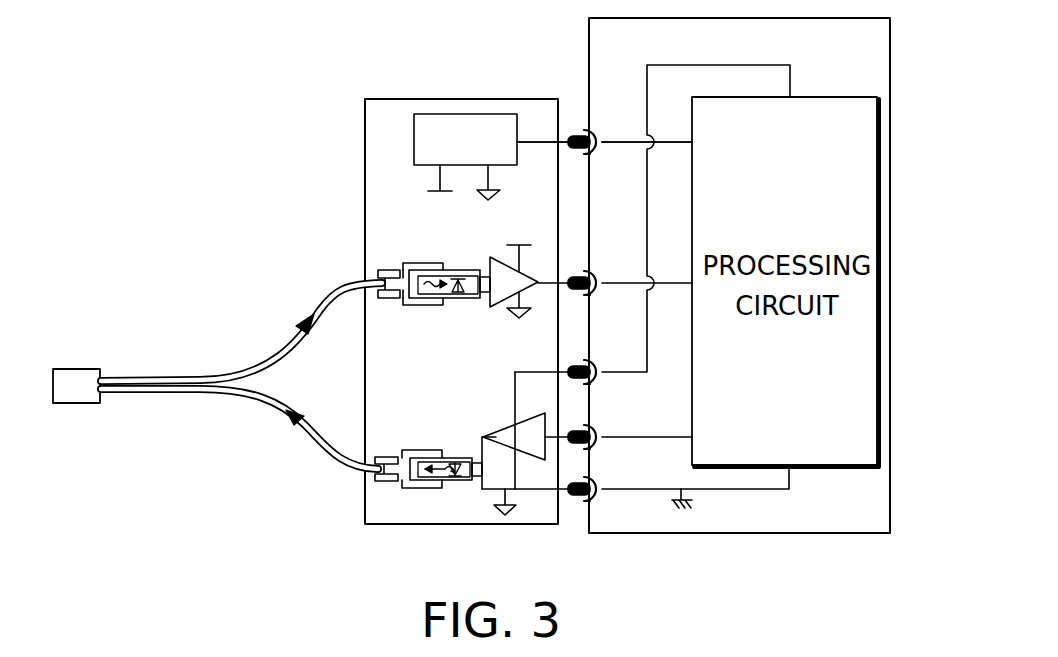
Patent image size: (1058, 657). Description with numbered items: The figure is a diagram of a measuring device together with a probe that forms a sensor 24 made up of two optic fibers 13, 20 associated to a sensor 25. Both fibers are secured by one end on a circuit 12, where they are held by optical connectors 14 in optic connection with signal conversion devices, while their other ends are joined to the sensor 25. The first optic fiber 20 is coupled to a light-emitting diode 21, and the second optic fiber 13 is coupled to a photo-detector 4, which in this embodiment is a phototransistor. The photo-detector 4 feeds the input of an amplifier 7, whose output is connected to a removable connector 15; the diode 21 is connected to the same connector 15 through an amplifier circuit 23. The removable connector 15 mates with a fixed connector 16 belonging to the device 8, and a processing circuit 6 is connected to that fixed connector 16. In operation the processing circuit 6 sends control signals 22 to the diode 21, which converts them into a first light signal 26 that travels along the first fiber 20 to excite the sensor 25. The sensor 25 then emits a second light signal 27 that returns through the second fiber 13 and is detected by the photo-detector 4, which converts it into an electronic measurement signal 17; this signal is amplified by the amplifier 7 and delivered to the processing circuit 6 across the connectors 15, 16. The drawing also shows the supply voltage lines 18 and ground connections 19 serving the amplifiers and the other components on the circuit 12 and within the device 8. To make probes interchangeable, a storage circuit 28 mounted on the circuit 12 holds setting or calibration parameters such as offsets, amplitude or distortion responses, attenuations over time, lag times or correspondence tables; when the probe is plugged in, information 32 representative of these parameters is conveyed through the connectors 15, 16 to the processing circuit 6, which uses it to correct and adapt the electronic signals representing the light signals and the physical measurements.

The photo-detector 4 is at (462, 270).
The processing circuit 6 is at (890, 172).
The amplifier 7 is at (499, 270).
The device 8 is at (812, 533).
The circuit 12 is at (365, 133).
The second optic fiber 13 is at (252, 371).
The optical fiber connector 14 is at (402, 300).
The removable connector 15 is at (579, 130).
The fixed connector 16 is at (598, 133).
The measurement signals 17 is at (617, 282).
The supply voltage line 18 is at (430, 182).
The ground 19 is at (494, 182).
The first optic fiber 20 is at (246, 394).
The light-emitting diode 21 is at (460, 483).
The control signals 22 is at (482, 445).
The amplifier circuit 23 is at (512, 433).
The sensor 24 is at (186, 303).
The sensor 25 is at (81, 368).
The first light signal 26 is at (290, 422).
The second light signal 27 is at (303, 326).
The storage circuit 28 is at (469, 108).
The information 32 is at (539, 141).